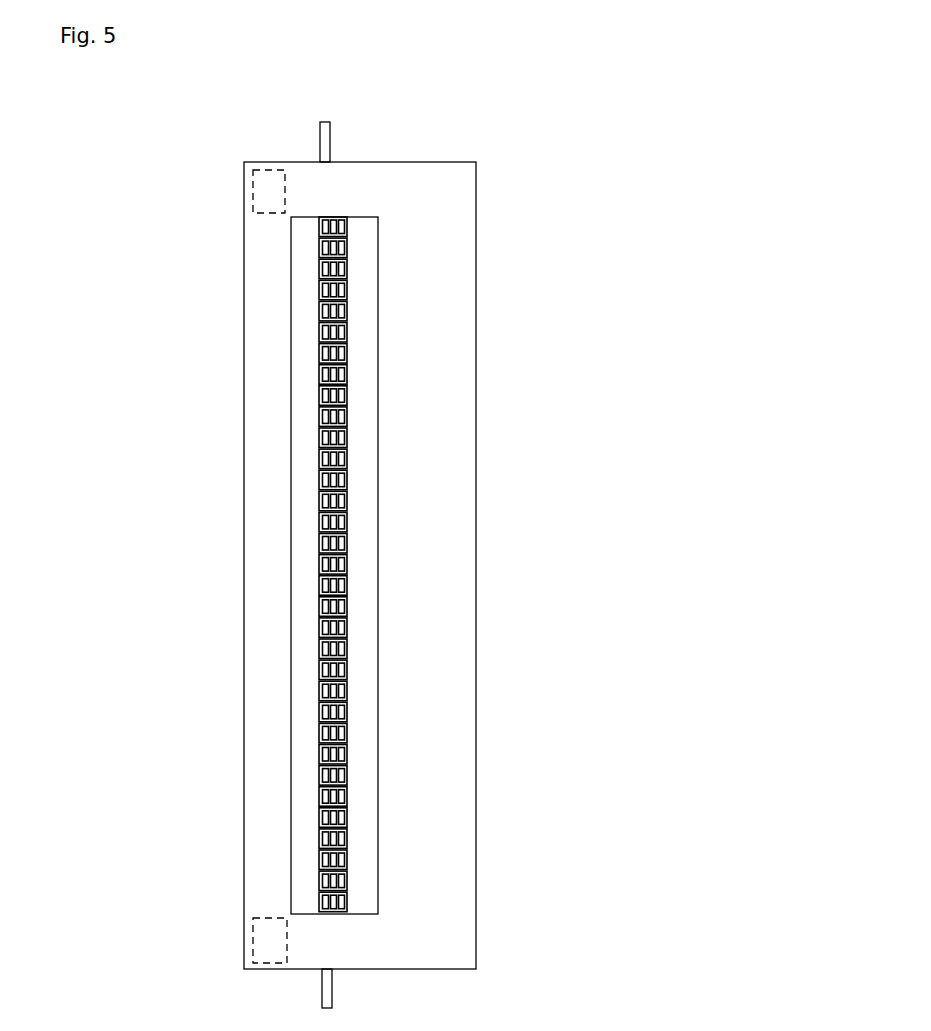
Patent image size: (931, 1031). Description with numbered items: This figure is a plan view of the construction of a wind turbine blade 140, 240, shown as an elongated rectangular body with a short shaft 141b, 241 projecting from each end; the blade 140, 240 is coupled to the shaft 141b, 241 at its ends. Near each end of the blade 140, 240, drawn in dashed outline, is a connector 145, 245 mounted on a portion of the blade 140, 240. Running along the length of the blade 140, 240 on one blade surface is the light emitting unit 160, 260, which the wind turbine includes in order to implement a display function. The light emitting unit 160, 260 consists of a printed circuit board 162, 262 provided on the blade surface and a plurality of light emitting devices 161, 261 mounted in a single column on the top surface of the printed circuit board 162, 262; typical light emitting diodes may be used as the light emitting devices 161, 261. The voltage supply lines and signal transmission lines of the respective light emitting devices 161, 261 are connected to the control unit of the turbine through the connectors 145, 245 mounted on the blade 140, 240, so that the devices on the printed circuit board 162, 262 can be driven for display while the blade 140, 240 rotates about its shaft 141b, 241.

The blade 140 is at (336, 538).
The blade 240 is at (150, 86).
The shaft 141b is at (420, 559).
The shaft 241 is at (328, 143).
The connectors 145 is at (195, 570).
The connectors 245 is at (262, 193).
The light emitting unit 160 is at (450, 565).
The light emitting unit 260 is at (380, 638).
The light emitting devices 161 is at (464, 564).
The light emitting devices 261 is at (347, 513).
The printed circuit board 162 is at (450, 565).
The printed circuit board 262 is at (367, 440).